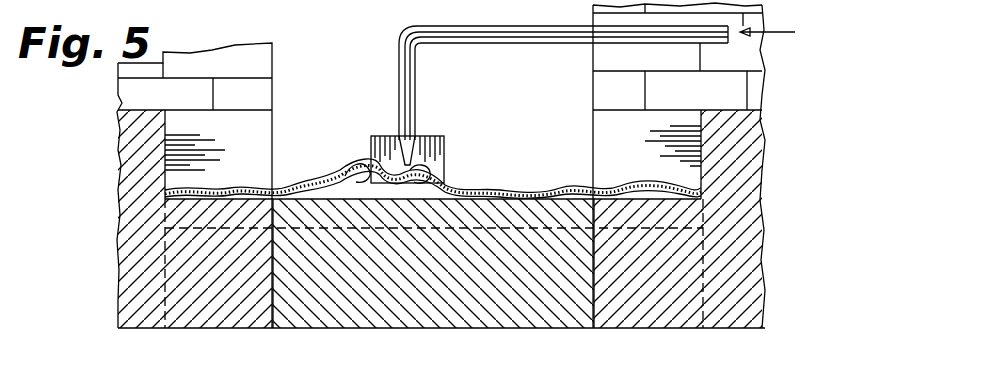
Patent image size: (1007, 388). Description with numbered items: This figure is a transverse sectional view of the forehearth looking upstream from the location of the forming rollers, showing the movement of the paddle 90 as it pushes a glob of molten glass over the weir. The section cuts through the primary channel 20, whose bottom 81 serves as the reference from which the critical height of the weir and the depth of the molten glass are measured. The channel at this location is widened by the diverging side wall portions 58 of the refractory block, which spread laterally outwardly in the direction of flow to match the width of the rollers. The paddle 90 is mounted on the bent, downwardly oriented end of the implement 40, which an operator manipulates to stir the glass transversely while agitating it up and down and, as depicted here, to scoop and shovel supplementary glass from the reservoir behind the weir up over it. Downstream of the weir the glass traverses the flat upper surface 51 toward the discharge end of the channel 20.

The primary channel 20 is at (272, 128).
The implement 40 is at (517, 25).
The flat upper surface 51 is at (520, 197).
The side wall portions 58 is at (198, 142).
The bottom 81 is at (428, 232).
The paddle 90 is at (445, 153).